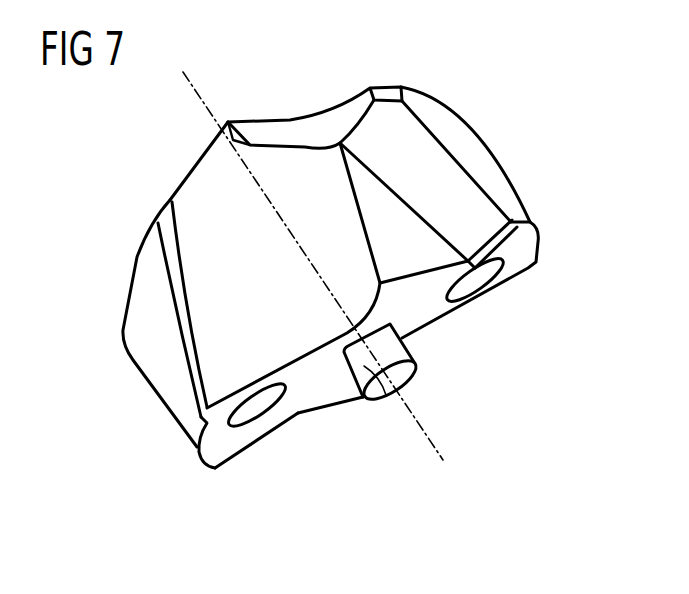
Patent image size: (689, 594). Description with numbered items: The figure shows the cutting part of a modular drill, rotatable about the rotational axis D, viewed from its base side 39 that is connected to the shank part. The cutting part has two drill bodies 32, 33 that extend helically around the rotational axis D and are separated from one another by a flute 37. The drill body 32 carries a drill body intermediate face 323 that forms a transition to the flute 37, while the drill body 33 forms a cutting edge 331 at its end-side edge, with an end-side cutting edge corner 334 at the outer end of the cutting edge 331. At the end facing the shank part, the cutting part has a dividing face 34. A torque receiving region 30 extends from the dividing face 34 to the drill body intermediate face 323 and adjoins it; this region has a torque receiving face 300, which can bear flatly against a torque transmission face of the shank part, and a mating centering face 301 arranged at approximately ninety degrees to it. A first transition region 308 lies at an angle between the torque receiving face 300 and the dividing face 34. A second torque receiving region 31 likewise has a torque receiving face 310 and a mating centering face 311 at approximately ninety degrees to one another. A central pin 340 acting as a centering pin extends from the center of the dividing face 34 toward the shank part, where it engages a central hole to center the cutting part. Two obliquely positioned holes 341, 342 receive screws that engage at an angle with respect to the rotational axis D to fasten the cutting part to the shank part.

The torque receiving region 30 is at (498, 153).
The torque receiving face 300 is at (430, 170).
The mating centering face 301 is at (390, 225).
The first transition region 308 is at (493, 233).
The torque receiving region 31 is at (361, 385).
The torque receiving face 310 is at (237, 447).
The mating centering face 311 is at (313, 413).
The drill body 32 is at (498, 182).
The drill body intermediate face 323 is at (322, 135).
The drill body 33 is at (137, 373).
The cutting edge 331 is at (184, 177).
The end-side cutting edge corner 334 is at (170, 194).
The dividing face 34 is at (412, 305).
The central pin 340 is at (395, 405).
The hole 341 is at (480, 280).
The hole 342 is at (257, 405).
The flute 37 is at (224, 212).
The base side 39 is at (430, 298).
The rotational axis D is at (417, 411).